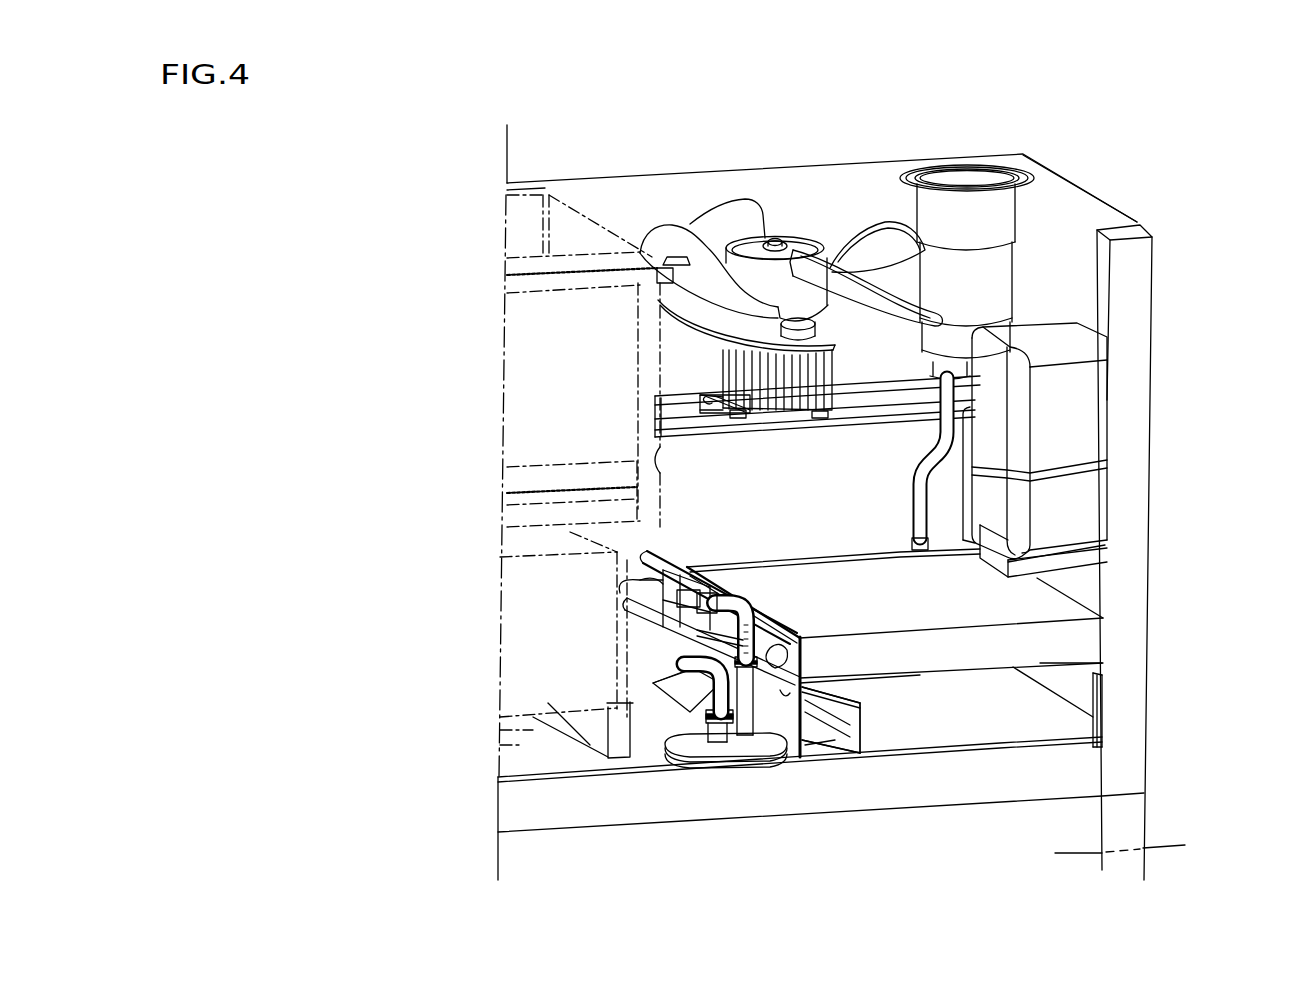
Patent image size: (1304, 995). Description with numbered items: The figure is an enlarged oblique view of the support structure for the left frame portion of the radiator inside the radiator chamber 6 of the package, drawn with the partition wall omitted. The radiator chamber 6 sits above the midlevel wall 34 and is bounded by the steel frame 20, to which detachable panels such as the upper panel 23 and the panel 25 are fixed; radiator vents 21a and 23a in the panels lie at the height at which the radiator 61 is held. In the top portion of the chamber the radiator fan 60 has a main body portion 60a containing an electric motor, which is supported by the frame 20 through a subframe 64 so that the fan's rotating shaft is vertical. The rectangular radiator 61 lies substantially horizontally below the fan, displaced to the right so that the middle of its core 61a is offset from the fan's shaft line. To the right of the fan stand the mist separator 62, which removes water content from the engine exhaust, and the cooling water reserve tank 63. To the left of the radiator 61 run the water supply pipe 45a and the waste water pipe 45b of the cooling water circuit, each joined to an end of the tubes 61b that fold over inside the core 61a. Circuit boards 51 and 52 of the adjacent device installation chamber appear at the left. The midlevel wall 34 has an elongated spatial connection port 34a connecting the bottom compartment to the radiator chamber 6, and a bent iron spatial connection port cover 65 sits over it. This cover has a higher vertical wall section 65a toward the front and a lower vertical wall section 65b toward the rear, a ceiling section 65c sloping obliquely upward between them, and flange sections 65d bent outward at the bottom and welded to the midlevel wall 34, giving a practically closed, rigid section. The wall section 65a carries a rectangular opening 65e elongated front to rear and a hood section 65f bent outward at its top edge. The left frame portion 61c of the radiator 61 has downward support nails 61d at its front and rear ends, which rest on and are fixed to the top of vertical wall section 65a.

The radiator chamber 6 is at (845, 183).
The frame 20 is at (1123, 502).
The radiator vent 21a is at (1053, 727).
The upper panel 23 is at (1063, 207).
The radiator vent 23a is at (1077, 680).
The panel 25 is at (646, 185).
The midlevel wall 34 is at (918, 783).
The spatial connection port 34a is at (800, 717).
The water supply pipe 45a is at (668, 563).
The waste water pipe 45b is at (650, 630).
The circuit board 51 is at (531, 258).
The circuit board 52 is at (567, 760).
The radiator fan 60 is at (736, 217).
The main body portion 60a is at (822, 330).
The radiator 61 is at (843, 578).
The core 61a is at (877, 582).
The tube 61b is at (640, 584).
The left frame portion 61c is at (763, 618).
The support nail 61d is at (790, 712).
The mist separator 62 is at (965, 178).
The cooling water reserve tank 63 is at (1090, 420).
The subframe 64 is at (848, 418).
The spatial connection port cover 65 is at (837, 687).
The vertical wall section 65a is at (790, 720).
The vertical wall section 65b is at (860, 720).
The ceiling section 65c is at (820, 683).
The flange section 65d is at (860, 750).
The opening 65e is at (690, 657).
The hood section 65f is at (750, 607).